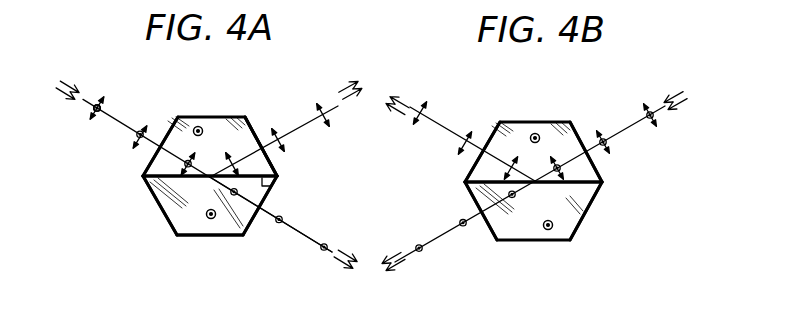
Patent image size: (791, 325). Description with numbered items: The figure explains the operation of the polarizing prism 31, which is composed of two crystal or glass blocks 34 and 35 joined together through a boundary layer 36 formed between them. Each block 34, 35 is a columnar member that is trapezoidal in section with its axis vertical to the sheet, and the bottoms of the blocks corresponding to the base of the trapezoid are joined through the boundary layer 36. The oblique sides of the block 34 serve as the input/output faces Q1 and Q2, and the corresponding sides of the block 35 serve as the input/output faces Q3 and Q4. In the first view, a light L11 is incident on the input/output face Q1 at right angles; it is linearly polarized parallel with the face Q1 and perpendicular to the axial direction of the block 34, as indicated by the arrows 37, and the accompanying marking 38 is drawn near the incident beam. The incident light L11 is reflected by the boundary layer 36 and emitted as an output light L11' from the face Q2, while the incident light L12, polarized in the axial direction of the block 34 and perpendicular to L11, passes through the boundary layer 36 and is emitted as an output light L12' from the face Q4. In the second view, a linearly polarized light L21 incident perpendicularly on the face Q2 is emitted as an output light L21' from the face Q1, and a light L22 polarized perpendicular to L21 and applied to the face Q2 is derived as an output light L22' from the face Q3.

In FIG. 4A, the polarizing prism 31 is at (221, 117).
In FIG. 4B, the polarizing prism 31 is at (541, 122).
In FIG. 4A, the crystal or glass block 34 is at (268, 157).
In FIG. 4A, the crystal or glass block 35 is at (217, 229).
In FIG. 4A, the boundary layer 36 is at (272, 188).
In FIG. 4A, the arrows 37 is at (103, 104).
In FIG. 4A, the light beam path 38 is at (95, 113).
In FIG. 4A, the input/output face Q1 is at (167, 135).
In FIG. 4B, the input/output face Q1 is at (492, 134).
In FIG. 4A, the input/output face Q2 is at (254, 132).
In FIG. 4B, the input/output face Q2 is at (576, 136).
In FIG. 4A, the input/output face Q3 is at (164, 213).
In FIG. 4B, the input/output face Q3 is at (489, 229).
In FIG. 4A, the input/output face Q4 is at (253, 220).
In FIG. 4B, the input/output face Q4 is at (580, 226).
In FIG. 4A, the incident light L11 is at (111, 116).
In FIG. 4A, the incident light L12 is at (179, 154).
In FIG. 4A, the output light L11' is at (286, 120).
In FIG. 4A, the output light L12' is at (283, 240).
In FIG. 4B, the linearly polarized light L21 is at (626, 121).
In FIG. 4B, the linearly polarized light L22 is at (618, 122).
In FIG. 4B, the output light L21' is at (460, 123).
In FIG. 4B, the output light L22' is at (458, 242).